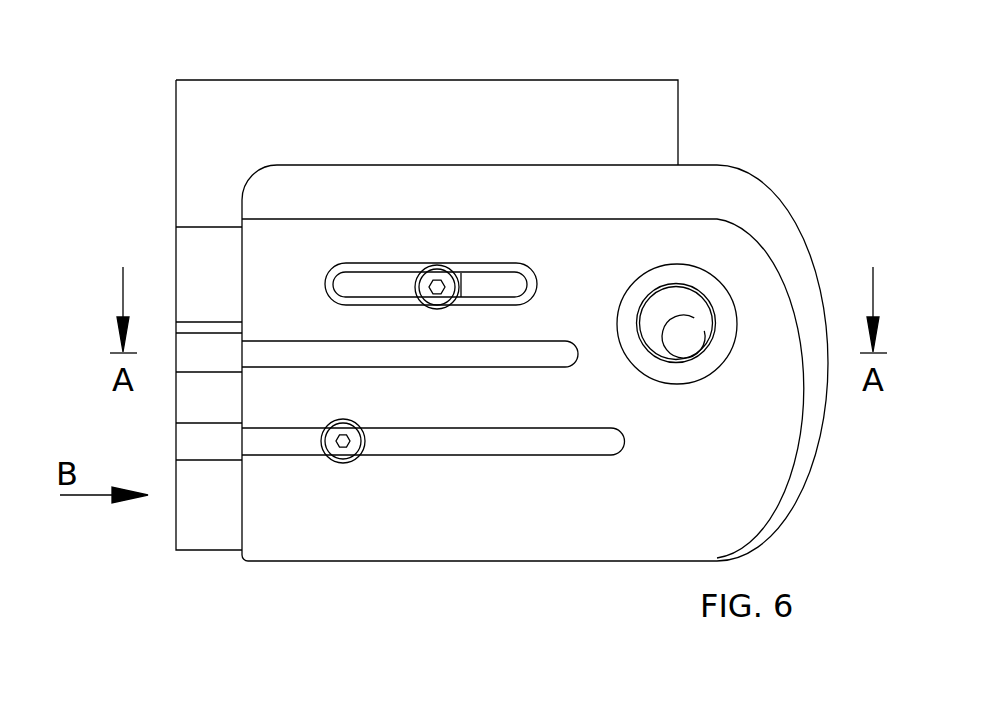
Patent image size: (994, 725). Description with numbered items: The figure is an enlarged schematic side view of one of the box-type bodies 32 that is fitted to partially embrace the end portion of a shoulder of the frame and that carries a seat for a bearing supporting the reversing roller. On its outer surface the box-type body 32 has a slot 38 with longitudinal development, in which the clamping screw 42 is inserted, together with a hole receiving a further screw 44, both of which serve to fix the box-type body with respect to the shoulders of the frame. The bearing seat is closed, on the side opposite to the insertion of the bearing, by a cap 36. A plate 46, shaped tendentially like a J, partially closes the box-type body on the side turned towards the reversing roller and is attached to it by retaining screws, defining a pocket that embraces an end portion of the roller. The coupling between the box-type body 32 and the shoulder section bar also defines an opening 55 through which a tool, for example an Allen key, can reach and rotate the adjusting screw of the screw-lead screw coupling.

The box-type body 32 is at (426, 576).
The cap 36 is at (682, 326).
The slot 38 is at (498, 284).
The clamping screw 42 is at (437, 287).
The further screw 44 is at (345, 463).
The plate 46 is at (755, 198).
The opening 55 is at (312, 341).